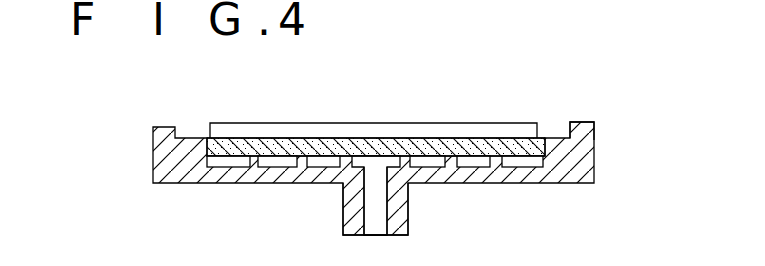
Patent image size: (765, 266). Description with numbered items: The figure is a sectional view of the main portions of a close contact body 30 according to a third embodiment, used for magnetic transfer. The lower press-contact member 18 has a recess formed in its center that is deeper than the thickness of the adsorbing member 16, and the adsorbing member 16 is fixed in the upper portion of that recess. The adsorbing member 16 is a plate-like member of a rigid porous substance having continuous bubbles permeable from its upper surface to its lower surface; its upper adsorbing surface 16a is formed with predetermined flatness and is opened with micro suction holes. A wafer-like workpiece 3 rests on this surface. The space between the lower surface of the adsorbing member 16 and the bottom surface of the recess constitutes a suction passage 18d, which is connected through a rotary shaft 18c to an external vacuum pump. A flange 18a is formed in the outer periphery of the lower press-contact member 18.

The close contact body 30 is at (197, 87).
The semiconductor wafer 3 is at (354, 128).
The adsorbing member 16 is at (478, 148).
The upper adsorbing surface 16a is at (300, 140).
The lower press-contact member 18 is at (156, 162).
The flange 18a is at (586, 122).
The rotary shaft 18c is at (342, 210).
The suction passage 18d is at (463, 163).